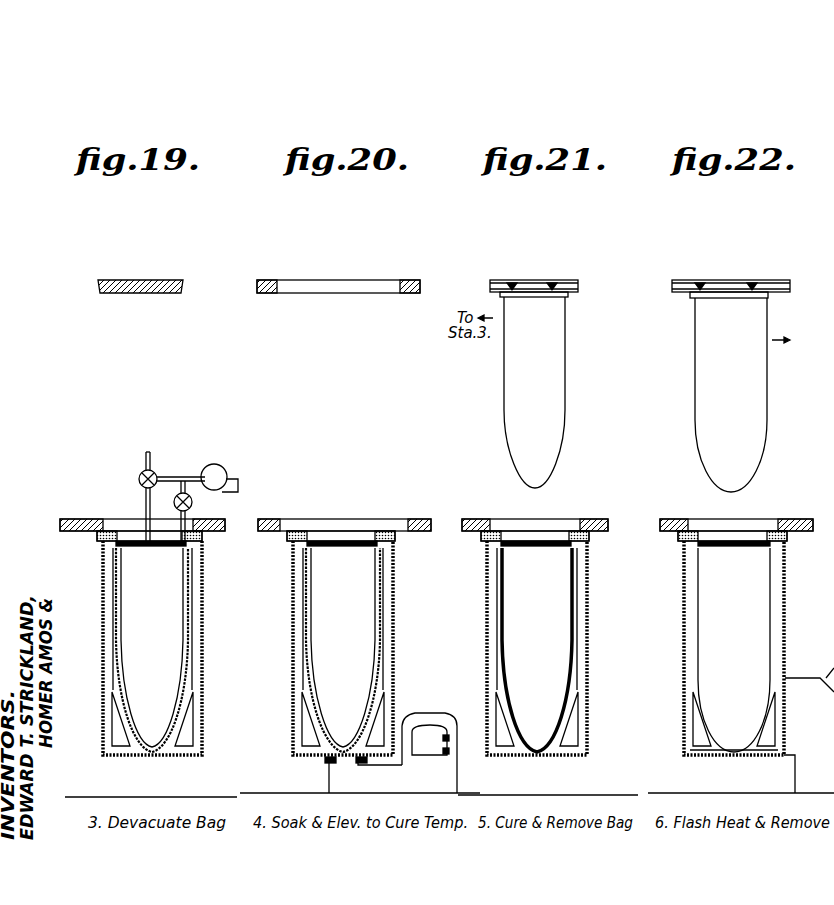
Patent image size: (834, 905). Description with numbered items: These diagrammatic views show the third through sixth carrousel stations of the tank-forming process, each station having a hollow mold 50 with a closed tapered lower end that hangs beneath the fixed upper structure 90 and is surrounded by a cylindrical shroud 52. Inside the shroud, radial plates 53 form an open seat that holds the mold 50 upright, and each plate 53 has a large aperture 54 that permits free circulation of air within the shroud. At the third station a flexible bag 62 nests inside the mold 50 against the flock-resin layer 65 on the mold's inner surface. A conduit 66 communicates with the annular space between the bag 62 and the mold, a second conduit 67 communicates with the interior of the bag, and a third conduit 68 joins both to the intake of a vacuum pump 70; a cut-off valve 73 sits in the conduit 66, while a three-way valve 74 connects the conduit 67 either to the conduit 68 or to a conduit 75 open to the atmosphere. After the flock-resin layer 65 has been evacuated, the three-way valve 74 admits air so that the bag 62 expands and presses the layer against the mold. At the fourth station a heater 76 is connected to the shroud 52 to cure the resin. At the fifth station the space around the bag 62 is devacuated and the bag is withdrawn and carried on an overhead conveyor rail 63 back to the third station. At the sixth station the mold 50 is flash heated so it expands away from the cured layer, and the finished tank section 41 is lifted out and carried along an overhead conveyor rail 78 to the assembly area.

In FIG. 22, the tank section 41 is at (701, 433).
In FIG. 19, the hollow mold 50 is at (196, 606).
In FIG. 20, the hollow mold 50 is at (385, 619).
In FIG. 21, the hollow mold 50 is at (574, 603).
In FIG. 22, the hollow mold 50 is at (772, 601).
In FIG. 19, the cylindrical shroud 52 is at (102, 566).
In FIG. 20, the cylindrical shroud 52 is at (296, 623).
In FIG. 21, the cylindrical shroud 52 is at (487, 602).
In FIG. 22, the cylindrical shroud 52 is at (684, 608).
In FIG. 19, the radial plates 53 is at (125, 684).
In FIG. 20, the radial plates 53 is at (316, 684).
In FIG. 21, the radial plates 53 is at (512, 686).
In FIG. 22, the radial plates 53 is at (712, 684).
In FIG. 22, the aperture 54 is at (700, 738).
In FIG. 19, the flexible bag 62 is at (119, 605).
In FIG. 20, the flexible bag 62 is at (314, 621).
In FIG. 21, the flexible bag 62 is at (566, 353).
In FIG. 21, the overhead conveyor rail 63 is at (566, 282).
In FIG. 19, the flock-resin layer 65 is at (121, 645).
In FIG. 20, the flock-resin layer 65 is at (316, 651).
In FIG. 19, the conduit 66 is at (181, 486).
In FIG. 19, the second conduit 67 is at (146, 493).
In FIG. 19, the third conduit 68 is at (195, 477).
In FIG. 19, the vacuum pump 70 is at (228, 470).
In FIG. 19, the cut-off valve 73 is at (193, 504).
In FIG. 19, the three-way valve 74 is at (139, 476).
In FIG. 19, the conduit 75 is at (146, 453).
In FIG. 20, the heater 76 is at (432, 722).
In FIG. 22, the overhead conveyor rail 78 is at (765, 282).
In FIG. 19, the fixed upper structure 90 is at (75, 520).
In FIG. 20, the fixed upper structure 90 is at (283, 520).
In FIG. 21, the fixed upper structure 90 is at (478, 518).
In FIG. 22, the fixed upper structure 90 is at (675, 518).